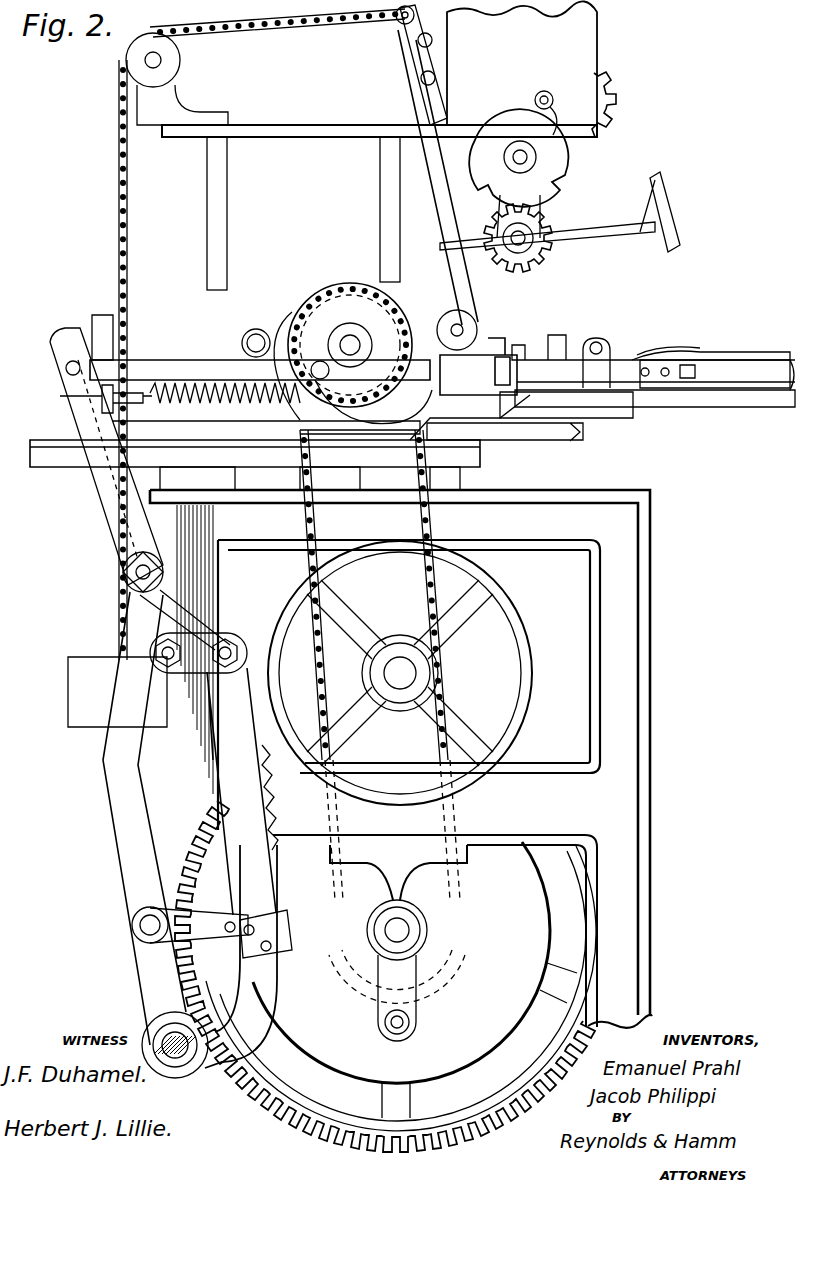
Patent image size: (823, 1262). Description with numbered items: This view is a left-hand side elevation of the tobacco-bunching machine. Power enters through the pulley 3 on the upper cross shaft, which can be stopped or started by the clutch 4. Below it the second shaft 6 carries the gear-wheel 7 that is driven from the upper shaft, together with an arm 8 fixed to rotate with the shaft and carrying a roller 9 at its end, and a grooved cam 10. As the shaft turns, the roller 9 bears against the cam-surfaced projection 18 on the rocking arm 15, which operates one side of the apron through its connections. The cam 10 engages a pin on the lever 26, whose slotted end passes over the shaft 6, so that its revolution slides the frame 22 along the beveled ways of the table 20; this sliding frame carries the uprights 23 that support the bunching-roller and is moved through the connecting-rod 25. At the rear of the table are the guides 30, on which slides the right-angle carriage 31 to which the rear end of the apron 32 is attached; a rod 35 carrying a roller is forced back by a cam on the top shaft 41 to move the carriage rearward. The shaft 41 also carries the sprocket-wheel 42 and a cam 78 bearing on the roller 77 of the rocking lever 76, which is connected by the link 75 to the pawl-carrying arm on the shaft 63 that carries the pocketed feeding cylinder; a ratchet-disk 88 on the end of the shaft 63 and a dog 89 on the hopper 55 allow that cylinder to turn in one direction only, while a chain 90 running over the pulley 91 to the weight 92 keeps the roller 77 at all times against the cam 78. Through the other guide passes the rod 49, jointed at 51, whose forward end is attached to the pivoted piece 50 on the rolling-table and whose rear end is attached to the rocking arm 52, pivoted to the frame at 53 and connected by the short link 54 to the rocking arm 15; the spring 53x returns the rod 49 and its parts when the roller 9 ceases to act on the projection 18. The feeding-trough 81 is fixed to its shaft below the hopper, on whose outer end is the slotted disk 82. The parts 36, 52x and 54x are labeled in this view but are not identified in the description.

The pulley 3 is at (520, 622).
The clutch 4 is at (362, 668).
The second shaft 6 is at (405, 932).
The gear-wheel 7 is at (487, 1128).
The arm 8 is at (416, 1008).
The roller 9 is at (402, 1040).
The grooved cam 10 is at (545, 925).
The rocking arm 15 is at (277, 995).
The projection 18 is at (283, 935).
The table 20 is at (710, 403).
The sliding frame 22 is at (610, 410).
The uprights 23 is at (598, 362).
The connecting-rod 25 is at (520, 440).
The lever 26 is at (170, 940).
The guides 30 is at (480, 355).
The carriage 31 is at (520, 345).
The apron 32 is at (725, 360).
The rod 35 is at (278, 312).
The roller 36 is at (252, 328).
The shaft 41 is at (350, 335).
The sprocket-wheel 42 is at (332, 292).
The rod 49 is at (632, 365).
The piece 50 is at (792, 365).
The joint 51 is at (692, 362).
The rocking arm 52 is at (108, 490).
The tension spring 52x is at (100, 388).
The pivot 53 is at (123, 575).
The spring 53x is at (185, 380).
The short link 54 is at (192, 675).
The spring wire 54x is at (318, 392).
The hopper 55 is at (588, 37).
The shaft 63 is at (528, 157).
The link or connecting-rod 75 is at (418, 44).
The rocking lever 76 is at (421, 80).
The roller 77 is at (470, 318).
The cam 78 is at (310, 290).
The feeding-trough 81 is at (560, 212).
The disk 82 is at (540, 265).
The ratchet-disk 88 is at (545, 178).
The dog 89 is at (563, 92).
The chain or cord 90 is at (290, 28).
The pulley 91 is at (180, 60).
The weight 92 is at (68, 697).